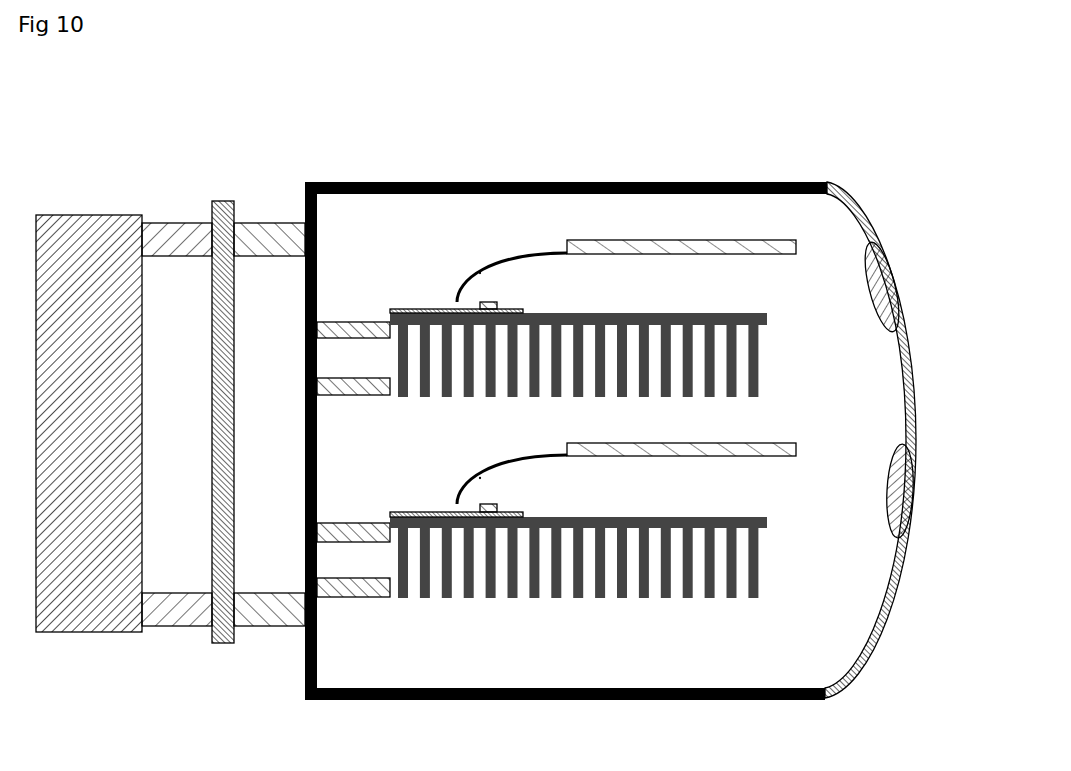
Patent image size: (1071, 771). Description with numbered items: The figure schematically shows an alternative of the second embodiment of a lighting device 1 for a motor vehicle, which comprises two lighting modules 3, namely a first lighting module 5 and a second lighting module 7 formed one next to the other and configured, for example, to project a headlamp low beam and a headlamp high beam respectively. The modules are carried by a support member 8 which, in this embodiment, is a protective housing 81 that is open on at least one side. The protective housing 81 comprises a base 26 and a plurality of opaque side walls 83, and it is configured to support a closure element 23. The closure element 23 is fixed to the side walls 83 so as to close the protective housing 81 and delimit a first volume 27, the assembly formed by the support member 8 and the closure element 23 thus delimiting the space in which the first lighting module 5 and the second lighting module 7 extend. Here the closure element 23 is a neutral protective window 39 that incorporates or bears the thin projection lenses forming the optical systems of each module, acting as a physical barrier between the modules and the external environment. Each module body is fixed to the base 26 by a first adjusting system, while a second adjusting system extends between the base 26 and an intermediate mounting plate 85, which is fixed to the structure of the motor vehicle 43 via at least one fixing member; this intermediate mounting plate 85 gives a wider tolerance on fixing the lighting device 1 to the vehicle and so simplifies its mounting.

The lighting device 1 is at (216, 727).
The lighting modules 3 is at (556, 403).
The first lighting module 5 is at (433, 476).
The second lighting module 7 is at (433, 264).
The support member 8 is at (410, 180).
The protective housing 81 is at (566, 437).
The side walls 83 is at (503, 182).
The closure element 23 is at (875, 222).
The protective window 39 is at (870, 440).
The base 26 is at (318, 265).
The first volume 27 is at (645, 673).
The structure of the motor vehicle 43 is at (90, 232).
The intermediate mounting plate 85 is at (221, 200).